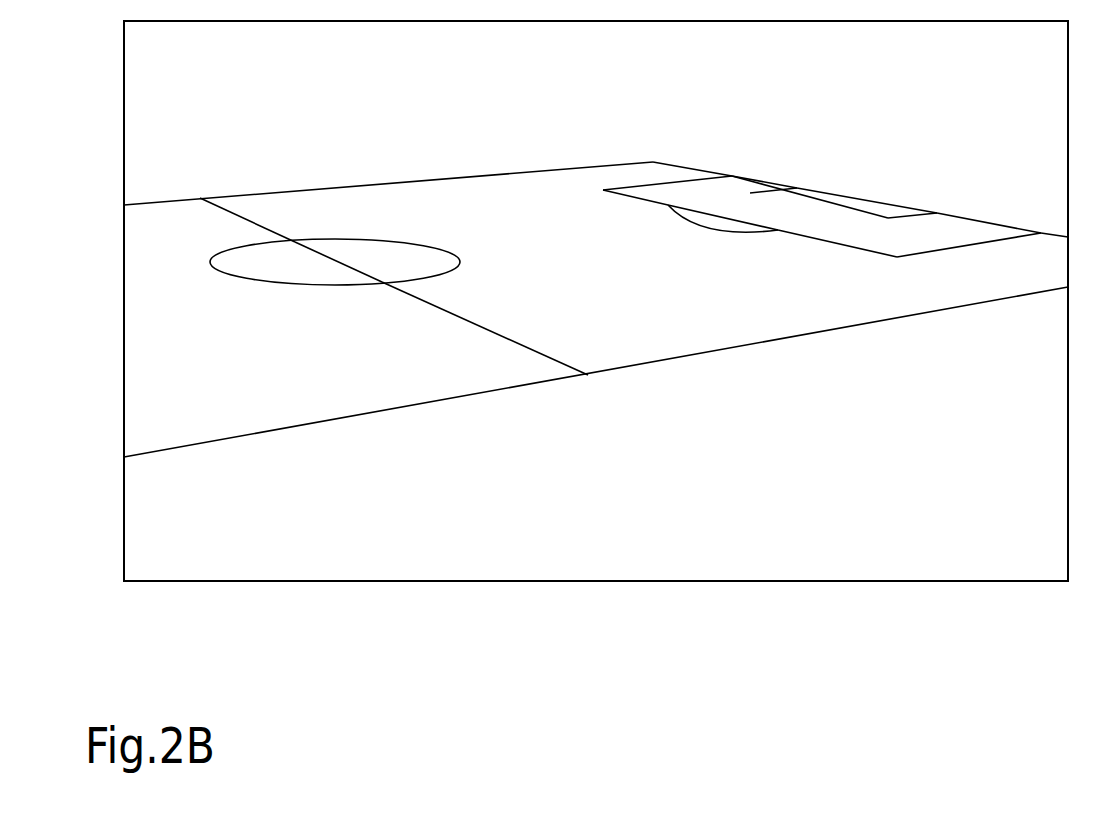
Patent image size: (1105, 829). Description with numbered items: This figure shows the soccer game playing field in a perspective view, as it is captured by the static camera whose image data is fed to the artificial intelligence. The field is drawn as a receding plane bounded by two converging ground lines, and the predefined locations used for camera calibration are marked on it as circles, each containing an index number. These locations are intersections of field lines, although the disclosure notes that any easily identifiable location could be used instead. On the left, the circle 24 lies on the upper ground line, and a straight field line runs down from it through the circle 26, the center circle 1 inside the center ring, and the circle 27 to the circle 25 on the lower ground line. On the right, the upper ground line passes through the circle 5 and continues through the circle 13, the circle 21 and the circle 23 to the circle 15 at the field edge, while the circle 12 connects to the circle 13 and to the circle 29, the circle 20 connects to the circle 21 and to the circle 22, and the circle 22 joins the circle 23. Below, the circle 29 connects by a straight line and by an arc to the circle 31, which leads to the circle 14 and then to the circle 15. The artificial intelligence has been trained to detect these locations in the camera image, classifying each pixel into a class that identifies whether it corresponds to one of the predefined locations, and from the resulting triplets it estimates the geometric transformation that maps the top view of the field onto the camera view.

The field line intersection 1 is at (335, 262).
The field line intersection 5 is at (686, 163).
The field line intersection 12 is at (661, 190).
The field line intersection 13 is at (804, 191).
The field line intersection 14 is at (963, 252).
The field line intersection 15 is at (1048, 233).
The field line intersection 20 is at (767, 193).
The field line intersection 21 is at (861, 194).
The field line intersection 22 is at (906, 218).
The field line intersection 23 is at (983, 217).
The field line intersection 24 is at (388, 202).
The field line intersection 25 is at (596, 372).
The field line intersection 26 is at (295, 242).
The field line intersection 27 is at (479, 322).
The field line intersection 29 is at (717, 212).
The field line intersection 31 is at (831, 237).